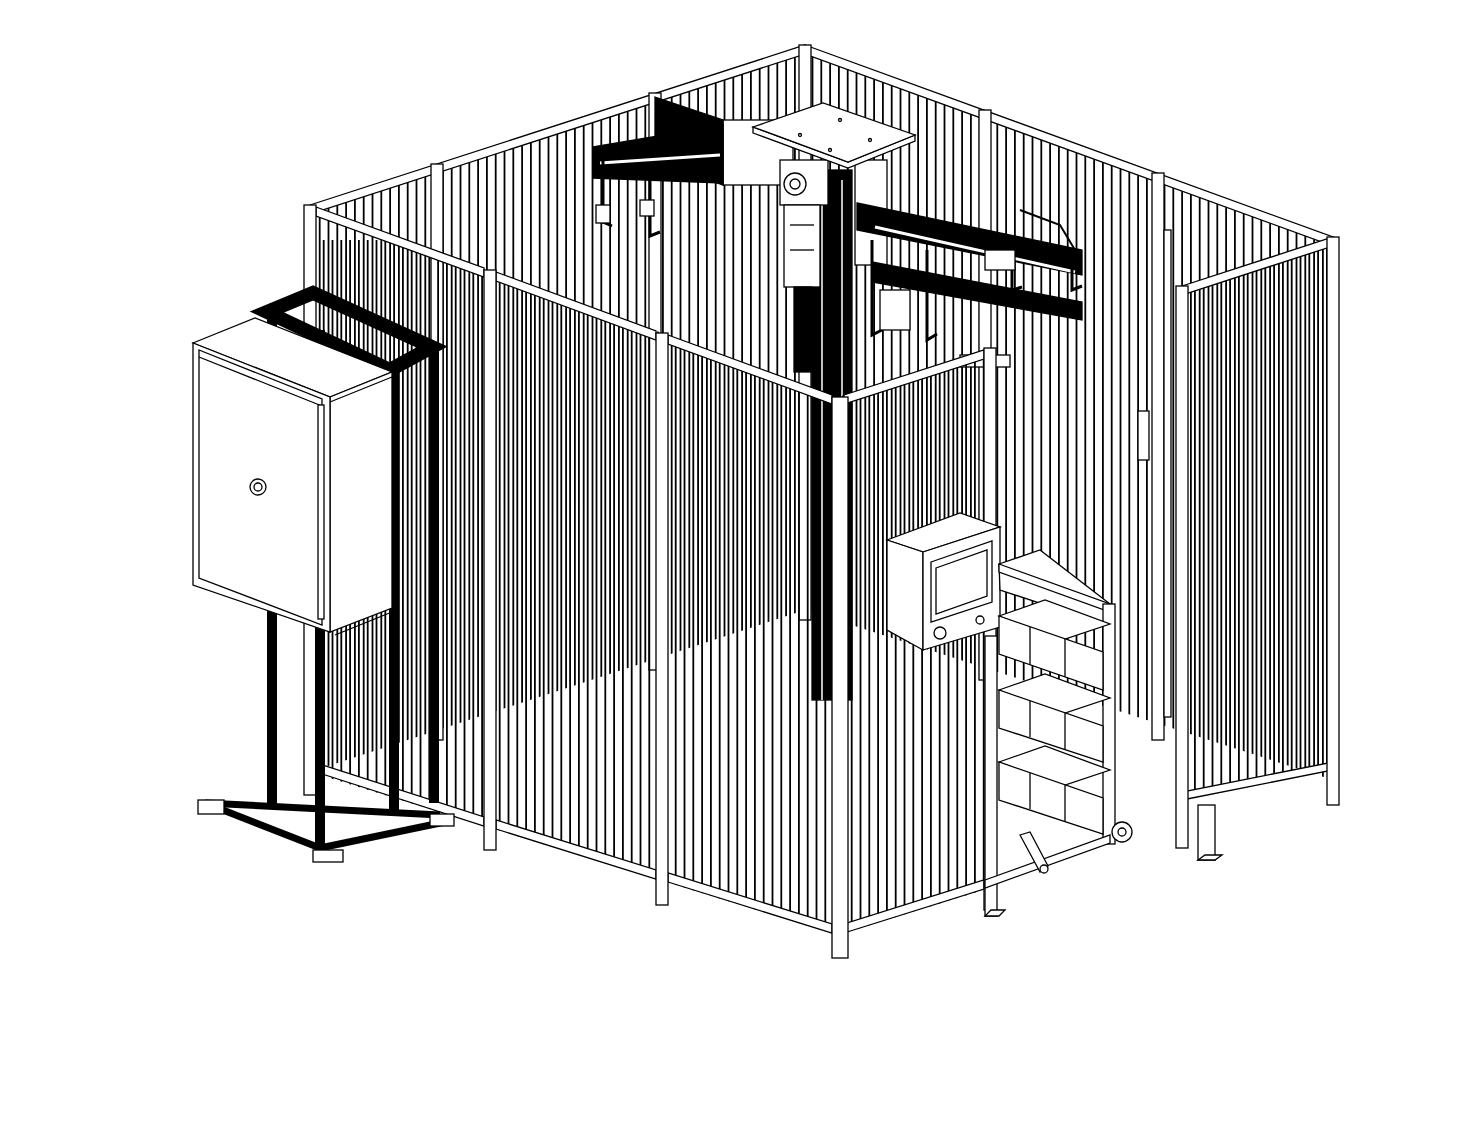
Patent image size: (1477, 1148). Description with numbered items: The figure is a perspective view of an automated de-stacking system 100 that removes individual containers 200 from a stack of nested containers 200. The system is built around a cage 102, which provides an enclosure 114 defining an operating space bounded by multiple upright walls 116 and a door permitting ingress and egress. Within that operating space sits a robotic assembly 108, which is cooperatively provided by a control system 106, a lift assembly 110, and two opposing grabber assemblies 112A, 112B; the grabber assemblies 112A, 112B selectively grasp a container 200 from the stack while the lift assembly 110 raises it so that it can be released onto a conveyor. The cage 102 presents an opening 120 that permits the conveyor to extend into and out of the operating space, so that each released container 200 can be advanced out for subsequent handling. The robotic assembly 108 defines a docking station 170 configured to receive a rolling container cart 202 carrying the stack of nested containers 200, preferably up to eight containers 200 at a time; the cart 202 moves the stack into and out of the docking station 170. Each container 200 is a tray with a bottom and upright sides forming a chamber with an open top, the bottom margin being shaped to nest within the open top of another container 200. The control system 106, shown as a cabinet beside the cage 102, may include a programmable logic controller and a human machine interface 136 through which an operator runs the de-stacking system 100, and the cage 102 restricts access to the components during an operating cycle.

The automated de-stacking system 100 is at (1116, 90).
The cage 102 is at (1320, 207).
The control system 106 is at (205, 411).
The robotic assembly 108 is at (942, 124).
The lift assembly 110 is at (840, 125).
The first grabber assembly 112A is at (1058, 193).
The second grabber assembly 112B is at (645, 77).
The enclosure 114 is at (1170, 230).
The upright walls 116 is at (1336, 224).
The opening 120 is at (1048, 905).
The human machine interface 136 is at (984, 592).
The docking station 170 is at (1226, 834).
The containers 200 is at (1107, 668).
The container cart 202 is at (1050, 853).